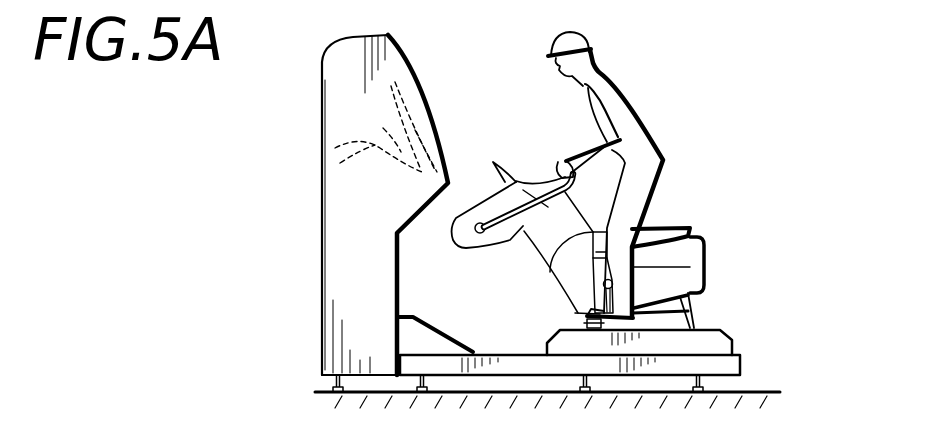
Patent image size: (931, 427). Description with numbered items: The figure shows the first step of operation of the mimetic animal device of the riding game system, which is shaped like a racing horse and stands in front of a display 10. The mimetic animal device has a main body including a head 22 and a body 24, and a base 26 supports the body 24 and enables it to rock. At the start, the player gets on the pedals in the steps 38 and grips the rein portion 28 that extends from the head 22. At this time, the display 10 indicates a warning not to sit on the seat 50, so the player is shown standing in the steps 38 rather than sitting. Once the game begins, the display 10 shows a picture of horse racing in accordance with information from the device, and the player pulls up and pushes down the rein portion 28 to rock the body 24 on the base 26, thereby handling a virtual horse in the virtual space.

The display 10 is at (415, 95).
The head 22 is at (488, 241).
The body 24 is at (705, 257).
The base 26 is at (730, 366).
The rein portion 28 is at (552, 181).
The step 38 is at (585, 320).
The seat 50 is at (657, 221).